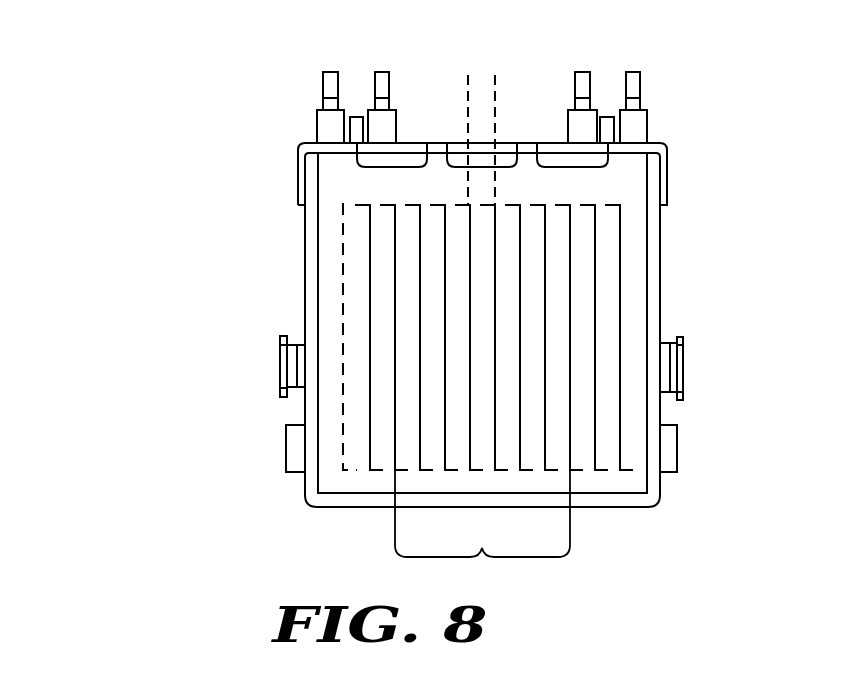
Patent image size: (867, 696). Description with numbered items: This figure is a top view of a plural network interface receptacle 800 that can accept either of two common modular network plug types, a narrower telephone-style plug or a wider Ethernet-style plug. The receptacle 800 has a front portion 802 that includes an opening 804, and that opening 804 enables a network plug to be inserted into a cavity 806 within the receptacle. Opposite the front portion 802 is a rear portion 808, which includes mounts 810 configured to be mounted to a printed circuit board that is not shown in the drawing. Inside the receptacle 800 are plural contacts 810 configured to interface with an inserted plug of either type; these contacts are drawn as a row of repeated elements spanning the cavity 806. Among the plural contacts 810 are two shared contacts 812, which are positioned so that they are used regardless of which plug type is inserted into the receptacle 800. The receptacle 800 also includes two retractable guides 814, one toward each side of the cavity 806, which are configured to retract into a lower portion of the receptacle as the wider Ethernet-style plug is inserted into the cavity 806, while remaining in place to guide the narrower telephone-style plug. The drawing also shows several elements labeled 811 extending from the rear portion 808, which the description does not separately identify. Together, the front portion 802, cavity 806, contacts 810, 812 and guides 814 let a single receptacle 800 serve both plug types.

The receptacle 800 is at (124, 46).
The front portion 802 is at (648, 508).
The opening 804 is at (333, 494).
The cavity 806 is at (355, 338).
The rear portion 808 is at (661, 143).
The plural contacts 810 is at (482, 532).
The terminals 811 is at (331, 72).
The shared contacts 812 is at (495, 78).
The retractable guides 814 is at (370, 282).